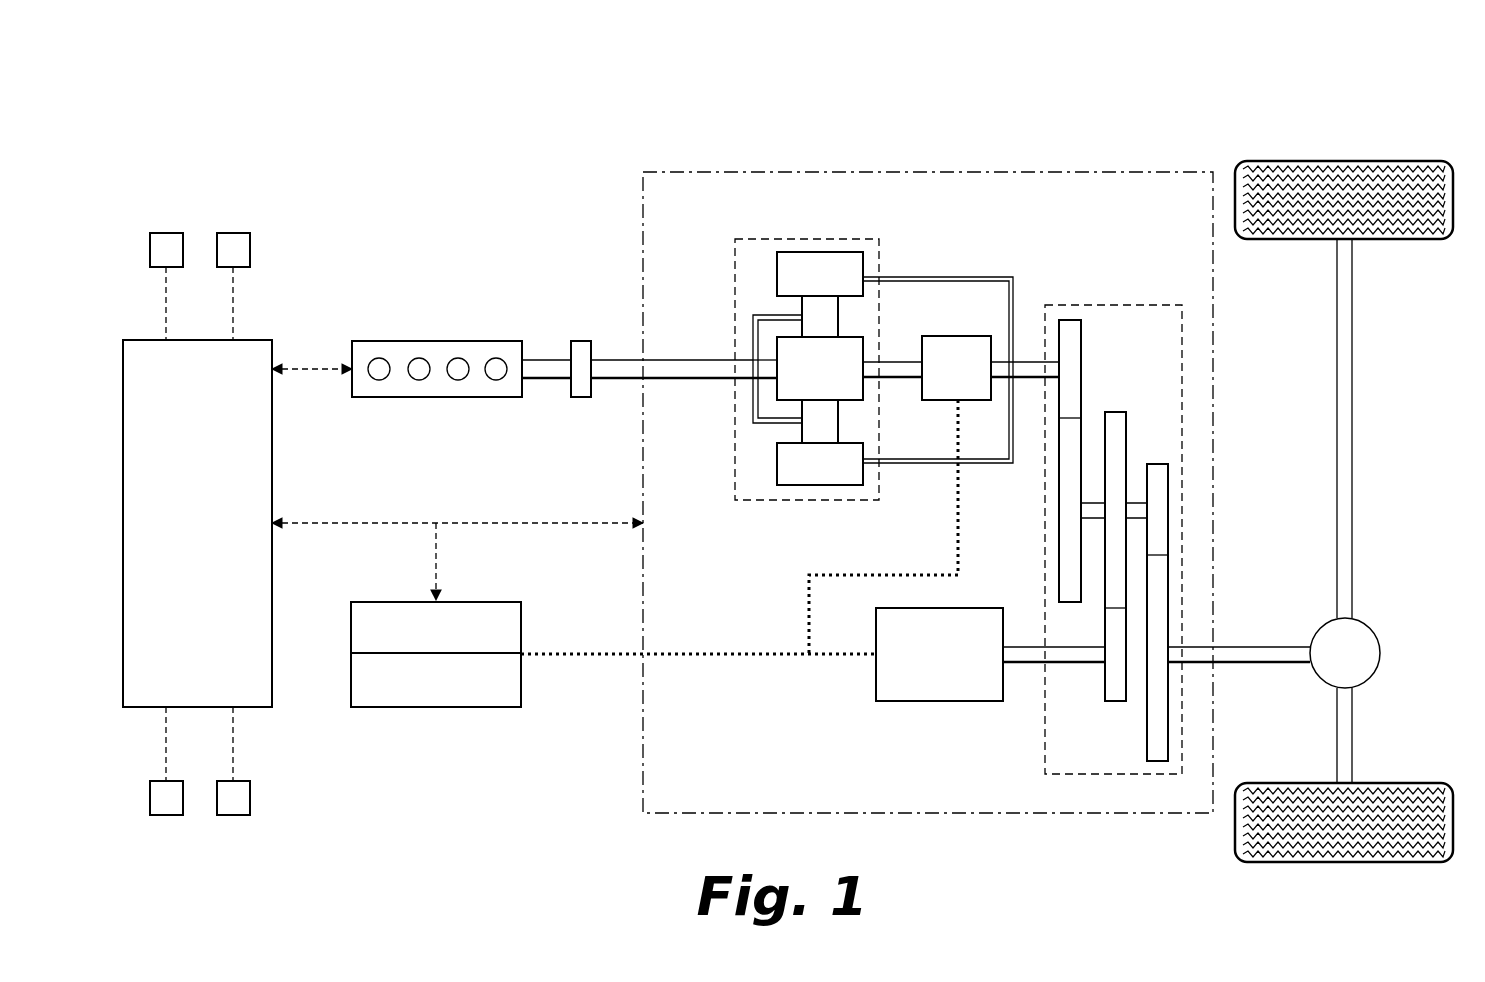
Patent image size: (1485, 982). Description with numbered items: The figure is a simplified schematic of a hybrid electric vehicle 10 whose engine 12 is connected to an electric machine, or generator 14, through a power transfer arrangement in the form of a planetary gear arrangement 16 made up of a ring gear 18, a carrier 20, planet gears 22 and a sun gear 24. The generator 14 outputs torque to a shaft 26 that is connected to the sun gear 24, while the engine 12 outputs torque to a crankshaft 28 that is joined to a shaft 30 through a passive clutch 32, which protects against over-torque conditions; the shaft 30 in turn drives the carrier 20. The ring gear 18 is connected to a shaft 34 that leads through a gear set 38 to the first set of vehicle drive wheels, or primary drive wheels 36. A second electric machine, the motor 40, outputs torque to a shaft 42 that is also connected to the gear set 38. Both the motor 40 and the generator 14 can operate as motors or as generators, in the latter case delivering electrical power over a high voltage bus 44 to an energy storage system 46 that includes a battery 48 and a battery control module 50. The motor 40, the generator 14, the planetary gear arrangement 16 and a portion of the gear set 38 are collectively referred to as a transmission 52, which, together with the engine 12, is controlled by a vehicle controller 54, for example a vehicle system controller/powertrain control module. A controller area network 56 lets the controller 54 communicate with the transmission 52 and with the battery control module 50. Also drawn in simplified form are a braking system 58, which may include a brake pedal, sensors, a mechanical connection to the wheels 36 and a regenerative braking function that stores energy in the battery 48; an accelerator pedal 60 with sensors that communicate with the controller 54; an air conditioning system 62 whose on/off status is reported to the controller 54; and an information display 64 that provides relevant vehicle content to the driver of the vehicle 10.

The vehicle 10 is at (1167, 118).
The engine 12 is at (400, 341).
The generator 14 is at (958, 336).
The planetary gear arrangement 16 is at (838, 347).
The ring gear 18 is at (777, 272).
The carrier 20 is at (753, 335).
The planet gears 22 is at (802, 316).
The sun gear 24 is at (863, 395).
The shaft 26 is at (900, 362).
The crankshaft 28 is at (555, 380).
The shaft 30 is at (620, 380).
The passive clutch 32 is at (581, 341).
The shaft 34 is at (1030, 362).
The primary drive wheels 36 is at (1388, 242).
The gear set 38 is at (1123, 776).
The motor 40 is at (940, 701).
The shaft 42 is at (1033, 647).
The high voltage bus 44 is at (742, 654).
The energy storage system 46 is at (422, 657).
The battery 48 is at (510, 602).
The battery control module 50 is at (505, 707).
The transmission 52 is at (640, 218).
The vehicle controller 54 is at (250, 340).
The controller area network 56 is at (373, 522).
The braking system 58 is at (168, 815).
The accelerator pedal 60 is at (233, 815).
The air conditioning system 62 is at (235, 233).
The information display 64 is at (168, 233).